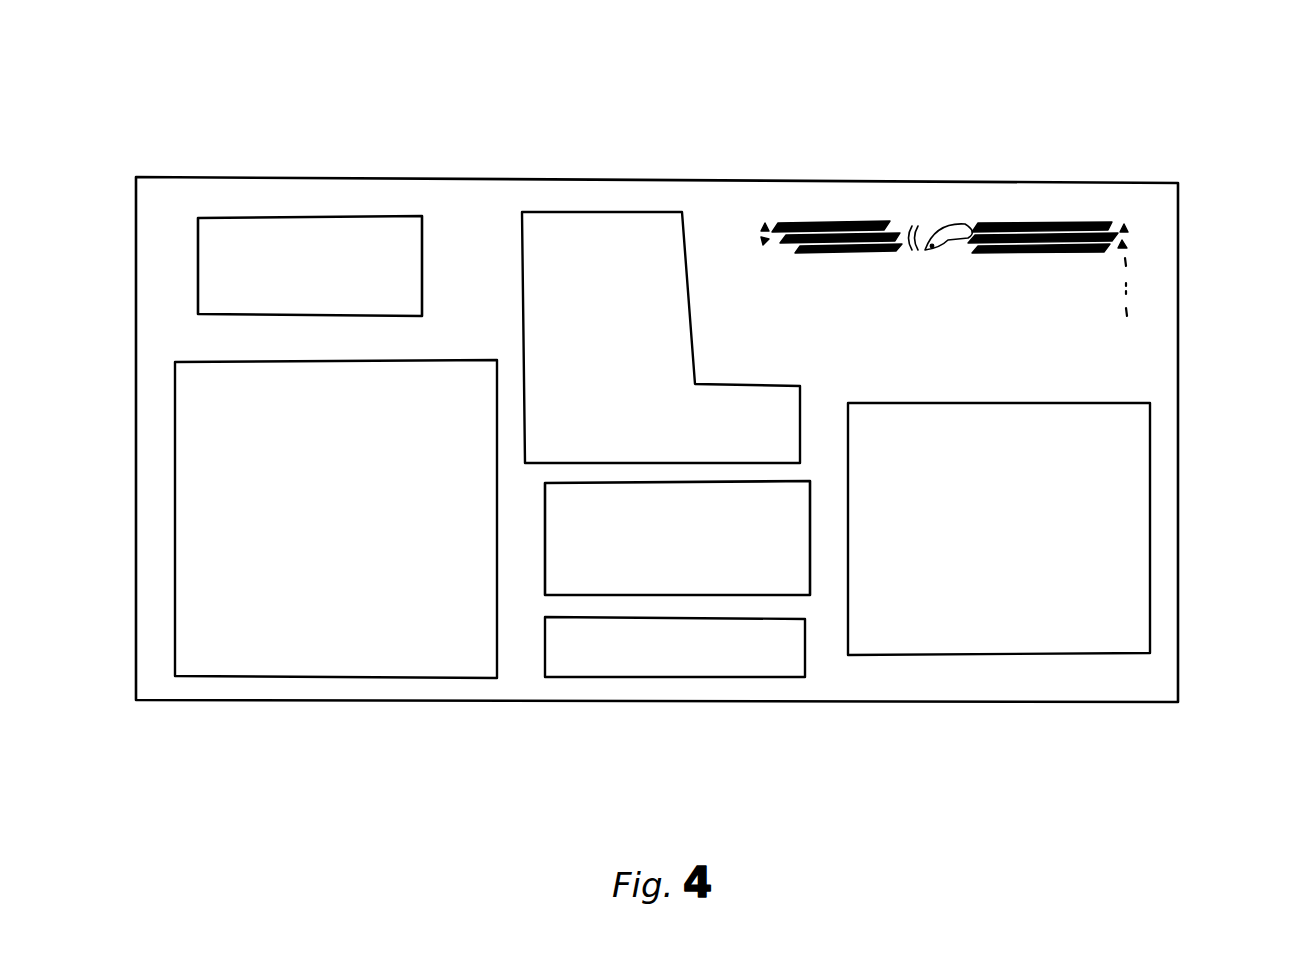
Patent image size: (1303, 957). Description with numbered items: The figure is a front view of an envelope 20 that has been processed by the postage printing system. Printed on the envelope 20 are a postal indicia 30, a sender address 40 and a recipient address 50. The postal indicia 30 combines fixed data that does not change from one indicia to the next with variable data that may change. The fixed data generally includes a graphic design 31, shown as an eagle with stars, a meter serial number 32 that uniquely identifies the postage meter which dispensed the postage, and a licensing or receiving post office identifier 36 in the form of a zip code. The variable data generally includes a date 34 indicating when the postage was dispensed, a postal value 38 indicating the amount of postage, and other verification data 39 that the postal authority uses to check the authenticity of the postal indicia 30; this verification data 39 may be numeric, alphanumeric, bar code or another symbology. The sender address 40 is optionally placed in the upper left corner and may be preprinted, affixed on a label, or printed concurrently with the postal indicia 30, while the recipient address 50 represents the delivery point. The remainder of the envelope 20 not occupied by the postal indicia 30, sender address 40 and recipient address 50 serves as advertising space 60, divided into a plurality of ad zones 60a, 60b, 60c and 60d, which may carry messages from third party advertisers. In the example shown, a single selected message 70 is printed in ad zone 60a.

The envelope 20 is at (418, 177).
The postal indicia 30 is at (997, 233).
The graphic design 31 is at (1028, 225).
The meter serial number 32 is at (1108, 268).
The date 34 is at (1108, 298).
The licensing or receiving post office identifier (zip code) 36 is at (1072, 330).
The postal value 38 is at (876, 283).
The verification data 39 is at (746, 246).
The sender address 40 is at (258, 218).
The recipient address 50 is at (545, 558).
The advertising space 60 is at (629, 115).
The ad zone 60a is at (205, 360).
The ad zone 60b is at (583, 212).
The ad zone 60c is at (802, 658).
The ad zone 60d is at (1112, 655).
The message 70 is at (215, 520).